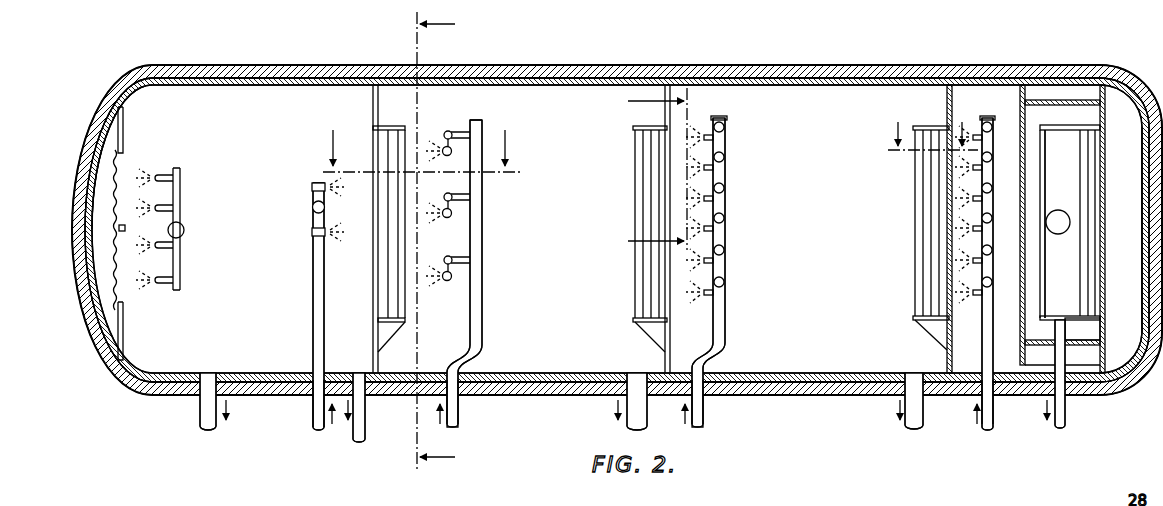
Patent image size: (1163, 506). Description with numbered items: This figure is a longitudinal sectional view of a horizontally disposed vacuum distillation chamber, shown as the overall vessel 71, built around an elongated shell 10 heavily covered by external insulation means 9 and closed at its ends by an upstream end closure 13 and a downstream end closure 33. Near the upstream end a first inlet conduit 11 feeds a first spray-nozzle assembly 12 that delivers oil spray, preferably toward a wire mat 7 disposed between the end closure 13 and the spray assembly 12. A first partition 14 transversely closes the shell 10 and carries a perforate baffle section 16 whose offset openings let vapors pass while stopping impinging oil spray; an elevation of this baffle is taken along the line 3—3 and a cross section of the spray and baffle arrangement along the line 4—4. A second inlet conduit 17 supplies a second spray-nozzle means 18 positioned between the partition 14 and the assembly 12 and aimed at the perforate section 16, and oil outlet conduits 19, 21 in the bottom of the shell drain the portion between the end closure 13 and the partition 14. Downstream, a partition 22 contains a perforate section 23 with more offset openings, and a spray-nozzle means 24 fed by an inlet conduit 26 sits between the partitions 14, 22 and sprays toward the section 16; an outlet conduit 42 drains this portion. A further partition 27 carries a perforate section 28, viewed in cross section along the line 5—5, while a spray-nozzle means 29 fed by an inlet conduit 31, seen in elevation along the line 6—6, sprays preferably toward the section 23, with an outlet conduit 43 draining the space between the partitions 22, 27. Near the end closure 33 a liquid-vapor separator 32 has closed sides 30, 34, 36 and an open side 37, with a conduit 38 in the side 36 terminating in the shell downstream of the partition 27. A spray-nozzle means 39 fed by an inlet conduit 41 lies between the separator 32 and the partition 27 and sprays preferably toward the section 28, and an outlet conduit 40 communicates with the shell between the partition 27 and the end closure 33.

The section line 3— 3 is at (445, 241).
The section line 4— 4 is at (422, 137).
The section line 5— 5 is at (933, 124).
The section line 6— 6 is at (647, 171).
The wire mat 7 is at (118, 200).
The external insulation means 9 is at (272, 67).
The elongated shell 10 is at (292, 88).
The first inlet conduit 11 is at (183, 224).
The first spray-nozzle assembly 12 is at (186, 248).
The upstream end closure 13 is at (82, 270).
The first partition 14 is at (379, 112).
The baffle section 16 is at (372, 267).
The second inlet conduit 17 is at (312, 411).
The second spray-nozzle means 18 is at (311, 209).
The oil outlet conduit 19 is at (366, 411).
The oil outlet conduit 21 is at (200, 411).
The partition 22 is at (665, 364).
The perforate section 23 is at (634, 178).
The spray-nozzle means 24 is at (484, 229).
The inlet conduit 26 is at (459, 411).
The partition 27 is at (946, 364).
The perforate section 28 is at (913, 200).
The spray-nozzle means 29 is at (728, 230).
The closed side 30 is at (1066, 128).
The inlet conduit 31 is at (704, 409).
The liquid-vapor separator 32 is at (1092, 156).
The downstream end closure 33 is at (1160, 180).
The closed side 34 is at (1046, 186).
The closed side 36 is at (1070, 320).
The open side 37 is at (1106, 217).
The conduit 38 is at (1062, 352).
The spray-nozzle means 39 is at (993, 176).
The outlet conduit 40 is at (1066, 409).
The inlet conduit 41 is at (994, 409).
The outlet conduit 42 is at (648, 409).
The outlet conduit 43 is at (924, 409).
The vessel 71 is at (792, 63).